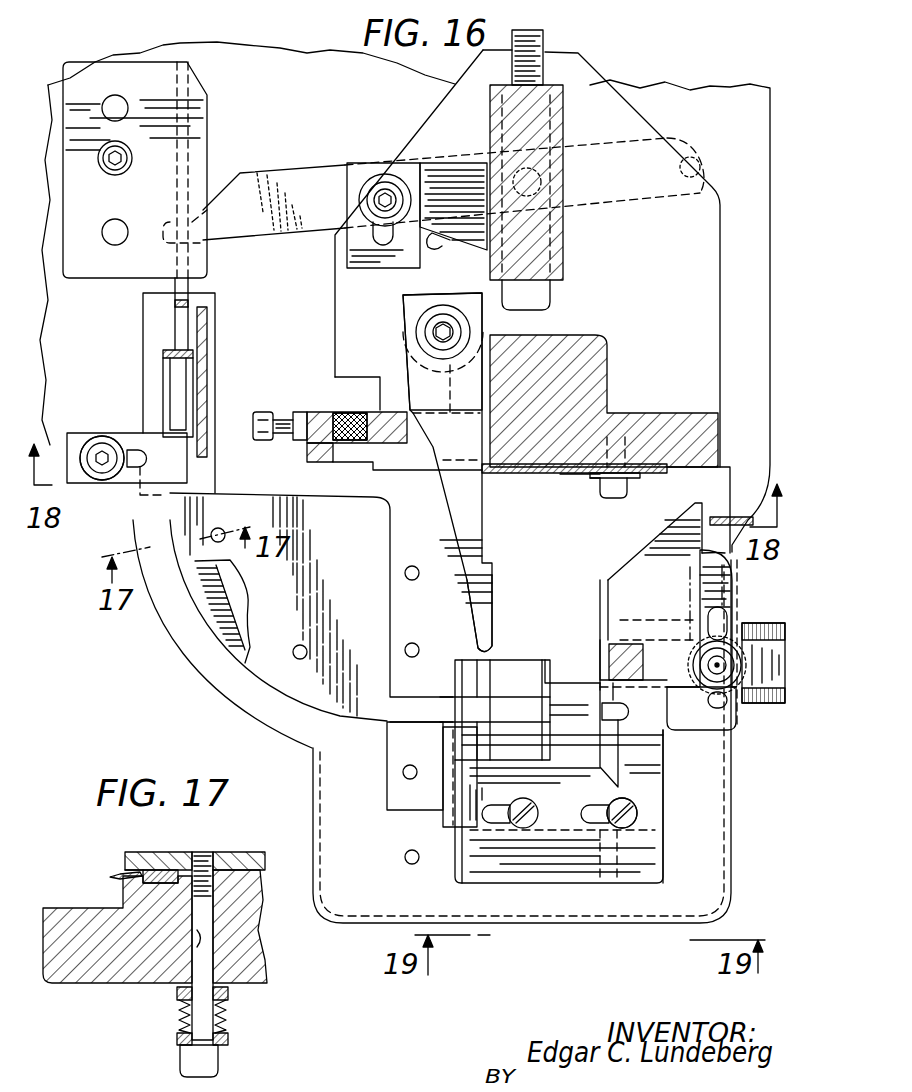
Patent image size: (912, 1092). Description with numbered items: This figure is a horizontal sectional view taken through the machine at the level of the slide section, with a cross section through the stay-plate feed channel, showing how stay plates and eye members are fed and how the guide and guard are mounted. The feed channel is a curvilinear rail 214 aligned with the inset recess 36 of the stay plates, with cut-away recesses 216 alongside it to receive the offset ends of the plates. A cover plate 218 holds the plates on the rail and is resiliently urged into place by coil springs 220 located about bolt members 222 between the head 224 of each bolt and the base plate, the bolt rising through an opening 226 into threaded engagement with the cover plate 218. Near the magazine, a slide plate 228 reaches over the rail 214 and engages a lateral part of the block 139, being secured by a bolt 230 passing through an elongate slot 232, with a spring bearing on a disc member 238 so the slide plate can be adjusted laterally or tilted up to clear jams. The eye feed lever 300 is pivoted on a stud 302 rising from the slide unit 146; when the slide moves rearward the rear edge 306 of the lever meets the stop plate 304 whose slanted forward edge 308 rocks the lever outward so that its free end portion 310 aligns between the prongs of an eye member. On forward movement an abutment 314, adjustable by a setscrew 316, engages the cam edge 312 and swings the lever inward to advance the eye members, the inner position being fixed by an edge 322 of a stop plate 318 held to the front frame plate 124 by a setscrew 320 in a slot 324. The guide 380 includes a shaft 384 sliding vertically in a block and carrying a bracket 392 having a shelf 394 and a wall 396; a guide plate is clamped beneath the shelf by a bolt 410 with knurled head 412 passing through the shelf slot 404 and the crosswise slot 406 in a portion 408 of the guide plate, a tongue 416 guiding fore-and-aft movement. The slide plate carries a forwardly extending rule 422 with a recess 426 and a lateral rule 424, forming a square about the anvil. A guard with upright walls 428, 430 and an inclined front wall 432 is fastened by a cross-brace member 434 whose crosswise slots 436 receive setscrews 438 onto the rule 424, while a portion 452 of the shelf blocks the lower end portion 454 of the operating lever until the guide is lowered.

In FIG. 16, the slide unit 146 is at (568, 250).
In FIG. 16, the stop plate 304 is at (440, 178).
In FIG. 16, the forward edge 308 is at (432, 240).
In FIG. 16, the rear edge 306 is at (440, 295).
In FIG. 16, the eye feed lever 300 is at (465, 500).
In FIG. 16, the free end portion 310 is at (477, 628).
In FIG. 16, the stud 302 is at (440, 333).
In FIG. 16, the abutment 314 is at (395, 410).
In FIG. 16, the cam edge 312 is at (432, 447).
In FIG. 16, the setscrew 316 is at (283, 418).
In FIG. 16, the block 139 is at (143, 340).
In FIG. 16, the slide plate 228 is at (127, 440).
In FIG. 16, the bolt 230 is at (102, 450).
In FIG. 16, the disc member 238 is at (95, 468).
In FIG. 16, the elongate slot 232 is at (147, 462).
In FIG. 16, the cover plate 218 is at (183, 517).
In FIG. 17, the cover plate 218 is at (228, 853).
In FIG. 16, the rail 214 is at (210, 617).
In FIG. 17, the rail 214 is at (123, 883).
In FIG. 16, the recesses 216 is at (240, 635).
In FIG. 17, the recesses 216 is at (168, 876).
In FIG. 16, the guide 380 is at (738, 795).
In FIG. 16, the recess 426 is at (604, 707).
In FIG. 16, the rule 424 is at (567, 773).
In FIG. 16, the forwardly extending rule 422 is at (614, 760).
In FIG. 16, the upright wall 430 is at (457, 866).
In FIG. 16, the front wall 432 is at (530, 877).
In FIG. 16, the cross-brace member 434 is at (640, 827).
In FIG. 16, the upright wall 428 is at (664, 822).
In FIG. 16, the crosswise slots 436 is at (588, 813).
In FIG. 16, the setscrews 438 is at (637, 807).
In FIG. 16, the front frame plate 124 is at (659, 411).
In FIG. 16, the edge 322 is at (478, 475).
In FIG. 16, the stop plate 318 is at (567, 478).
In FIG. 16, the setscrew 320 is at (594, 497).
In FIG. 16, the slot 324 is at (628, 486).
In FIG. 16, the portion 452 is at (662, 526).
In FIG. 16, the lower end portion 454 is at (733, 516).
In FIG. 16, the bracket 392 is at (594, 589).
In FIG. 16, the wall 396 is at (600, 608).
In FIG. 16, the shaft 384 is at (606, 656).
In FIG. 16, the tongue 416 is at (740, 584).
In FIG. 16, the shelf 394 is at (712, 574).
In FIG. 16, the elongate slot 404 is at (705, 618).
In FIG. 16, the bolt 410 is at (700, 658).
In FIG. 16, the head 412 is at (700, 650).
In FIG. 16, the slot 406 is at (750, 660).
In FIG. 16, the portion 408 is at (768, 705).
In FIG. 17, the opening 226 is at (142, 983).
In FIG. 17, the recess 36 is at (145, 853).
In FIG. 17, the bolt members 222 is at (197, 973).
In FIG. 17, the coil springs 220 is at (227, 1018).
In FIG. 17, the head 224 is at (215, 1058).